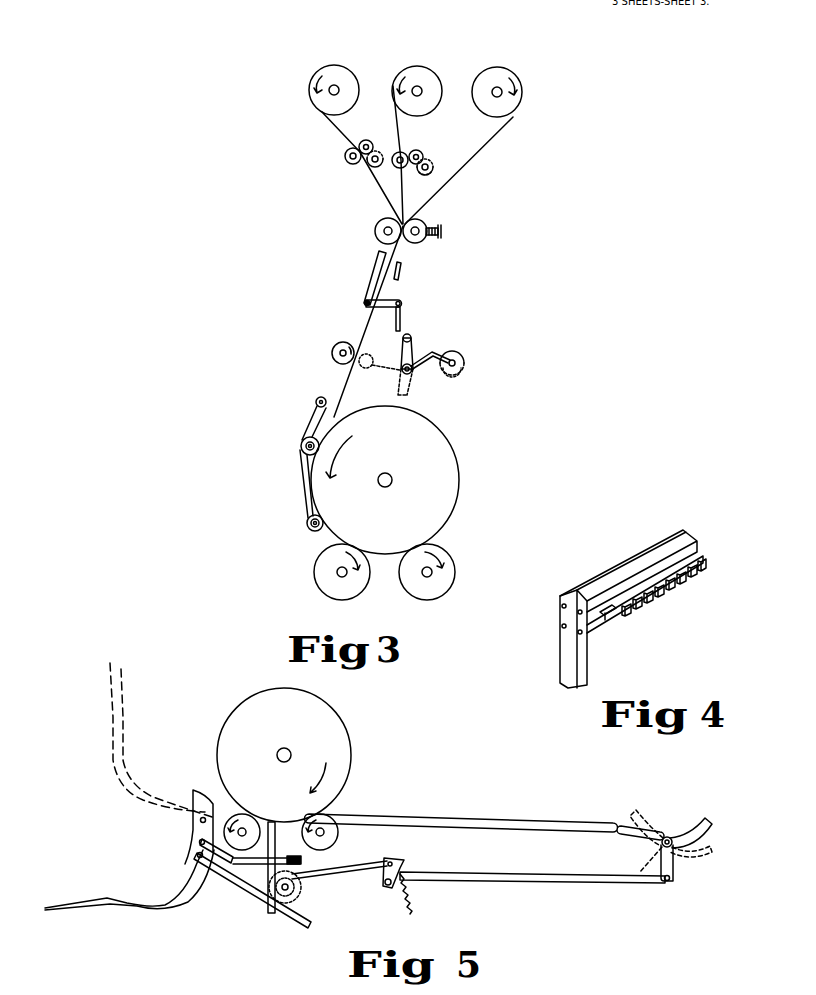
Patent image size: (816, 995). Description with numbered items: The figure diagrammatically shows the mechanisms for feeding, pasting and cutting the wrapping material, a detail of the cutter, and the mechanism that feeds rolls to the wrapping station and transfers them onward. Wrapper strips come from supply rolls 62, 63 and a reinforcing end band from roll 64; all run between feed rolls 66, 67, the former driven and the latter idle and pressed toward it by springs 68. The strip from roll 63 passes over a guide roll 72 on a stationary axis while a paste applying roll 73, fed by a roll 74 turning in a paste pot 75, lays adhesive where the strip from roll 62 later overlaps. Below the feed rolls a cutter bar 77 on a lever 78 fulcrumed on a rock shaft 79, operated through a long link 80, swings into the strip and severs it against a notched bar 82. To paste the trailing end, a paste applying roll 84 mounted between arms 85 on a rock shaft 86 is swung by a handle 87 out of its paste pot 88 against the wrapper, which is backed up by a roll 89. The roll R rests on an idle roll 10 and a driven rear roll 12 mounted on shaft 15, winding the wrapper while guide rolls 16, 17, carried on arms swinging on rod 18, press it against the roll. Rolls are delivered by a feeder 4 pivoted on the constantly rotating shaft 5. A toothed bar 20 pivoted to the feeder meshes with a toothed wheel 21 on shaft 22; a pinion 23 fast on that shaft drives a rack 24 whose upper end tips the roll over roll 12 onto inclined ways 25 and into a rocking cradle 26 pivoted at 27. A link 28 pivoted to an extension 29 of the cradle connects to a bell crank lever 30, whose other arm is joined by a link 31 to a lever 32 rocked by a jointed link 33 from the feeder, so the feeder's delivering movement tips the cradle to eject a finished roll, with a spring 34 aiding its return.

In FIG. 5, the feeder 4 is at (148, 903).
In FIG. 5, the shaft 5 is at (201, 823).
In FIG. 3, the roll 10 is at (455, 562).
In FIG. 5, the roll 10 is at (241, 818).
In FIG. 3, the rear roll 12 is at (318, 566).
In FIG. 5, the rear roll 12 is at (331, 817).
In FIG. 3, the shaft 15 is at (340, 575).
In FIG. 3, the guide roll 16 is at (307, 522).
In FIG. 3, the guide roll 17 is at (300, 446).
In FIG. 3, the rod 18 is at (316, 402).
In FIG. 5, the toothed bar 20 is at (232, 880).
In FIG. 5, the toothed wheel 21 is at (293, 894).
In FIG. 5, the shaft 22 is at (301, 887).
In FIG. 5, the pinion 23 is at (283, 903).
In FIG. 5, the rack 24 is at (270, 905).
In FIG. 5, the ways 25 is at (433, 820).
In FIG. 5, the rocking cradle 26 is at (697, 822).
In FIG. 5, the pivot 27 is at (661, 843).
In FIG. 5, the link 28 is at (610, 882).
In FIG. 5, the extension 29 is at (675, 866).
In FIG. 5, the bell crank lever 30 is at (394, 889).
In FIG. 5, the link 31 is at (363, 866).
In FIG. 5, the lever 32 is at (292, 856).
In FIG. 5, the jointed link 33 is at (205, 858).
In FIG. 5, the spring 34 is at (421, 894).
In FIG. 3, the roll 62 is at (501, 72).
In FIG. 3, the roll 63 is at (421, 72).
In FIG. 3, the roll 64 is at (331, 72).
In FIG. 3, the feed roll 66 is at (379, 222).
In FIG. 3, the feed roll 67 is at (430, 238).
In FIG. 3, the springs 68 is at (430, 227).
In FIG. 3, the guide roll 72 is at (397, 153).
In FIG. 3, the paste applying roll 73 is at (408, 153).
In FIG. 3, the roll 74 is at (427, 163).
In FIG. 3, the paste pot 75 is at (432, 172).
In FIG. 4, the cutter bar 77 is at (662, 592).
In FIG. 3, the lever 78 is at (372, 283).
In FIG. 4, the lever 78 is at (567, 652).
In FIG. 3, the rock shaft 79 is at (365, 305).
In FIG. 3, the link 80 is at (402, 320).
In FIG. 3, the bar 82 is at (401, 277).
In FIG. 3, the paste applying roll 84 is at (458, 357).
In FIG. 3, the arms 85 is at (434, 352).
In FIG. 3, the rock shaft 86 is at (412, 372).
In FIG. 3, the handle 87 is at (412, 351).
In FIG. 3, the paste pot 88 is at (466, 372).
In FIG. 3, the roll 89 is at (332, 353).
In FIG. 3, the roll R is at (436, 443).
In FIG. 5, the roll R is at (336, 742).